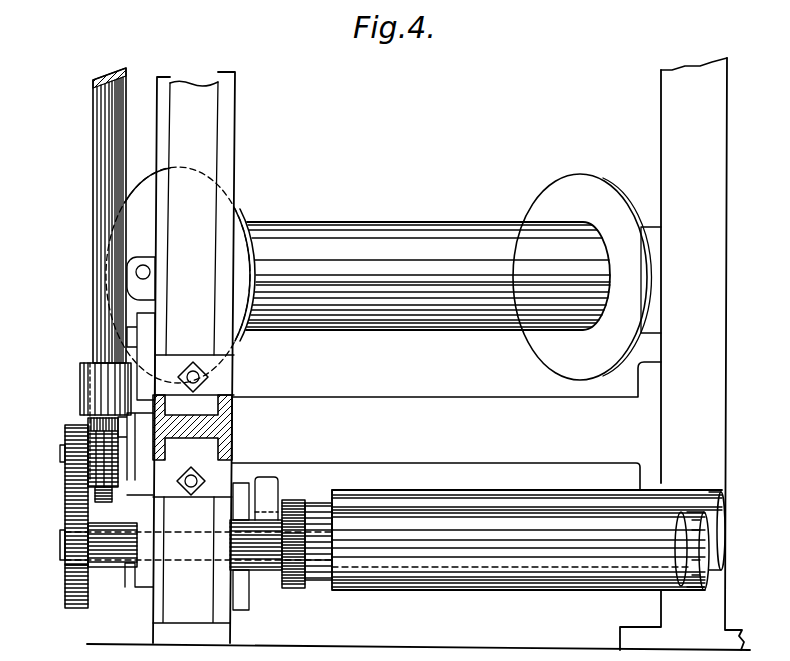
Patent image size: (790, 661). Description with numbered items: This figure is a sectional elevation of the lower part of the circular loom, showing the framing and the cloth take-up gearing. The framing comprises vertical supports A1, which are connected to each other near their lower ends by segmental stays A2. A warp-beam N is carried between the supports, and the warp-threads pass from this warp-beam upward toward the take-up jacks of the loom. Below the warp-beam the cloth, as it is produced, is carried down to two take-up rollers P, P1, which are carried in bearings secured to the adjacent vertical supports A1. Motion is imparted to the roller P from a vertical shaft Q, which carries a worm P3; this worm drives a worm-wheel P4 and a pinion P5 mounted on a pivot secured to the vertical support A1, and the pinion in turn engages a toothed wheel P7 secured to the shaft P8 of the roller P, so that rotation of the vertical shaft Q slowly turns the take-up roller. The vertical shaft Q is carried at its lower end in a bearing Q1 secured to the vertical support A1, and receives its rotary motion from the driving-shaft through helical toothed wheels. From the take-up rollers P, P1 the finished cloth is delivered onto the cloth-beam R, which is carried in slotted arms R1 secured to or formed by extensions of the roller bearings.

The vertical support A1 is at (418, 354).
The segmental stay A2 is at (446, 426).
The warp-beam N is at (379, 275).
The vertical shaft Q is at (97, 181).
The bearing Q1 is at (82, 384).
The take-up roller P is at (695, 590).
The take-up roller P1 is at (404, 535).
The worm P3 is at (69, 468).
The worm-wheel P4 is at (110, 490).
The pinion P5 is at (67, 430).
The toothed wheel P7 is at (66, 592).
The shaft P8 is at (61, 544).
The cloth-beam R is at (530, 494).
The slotted arm R1 is at (270, 488).